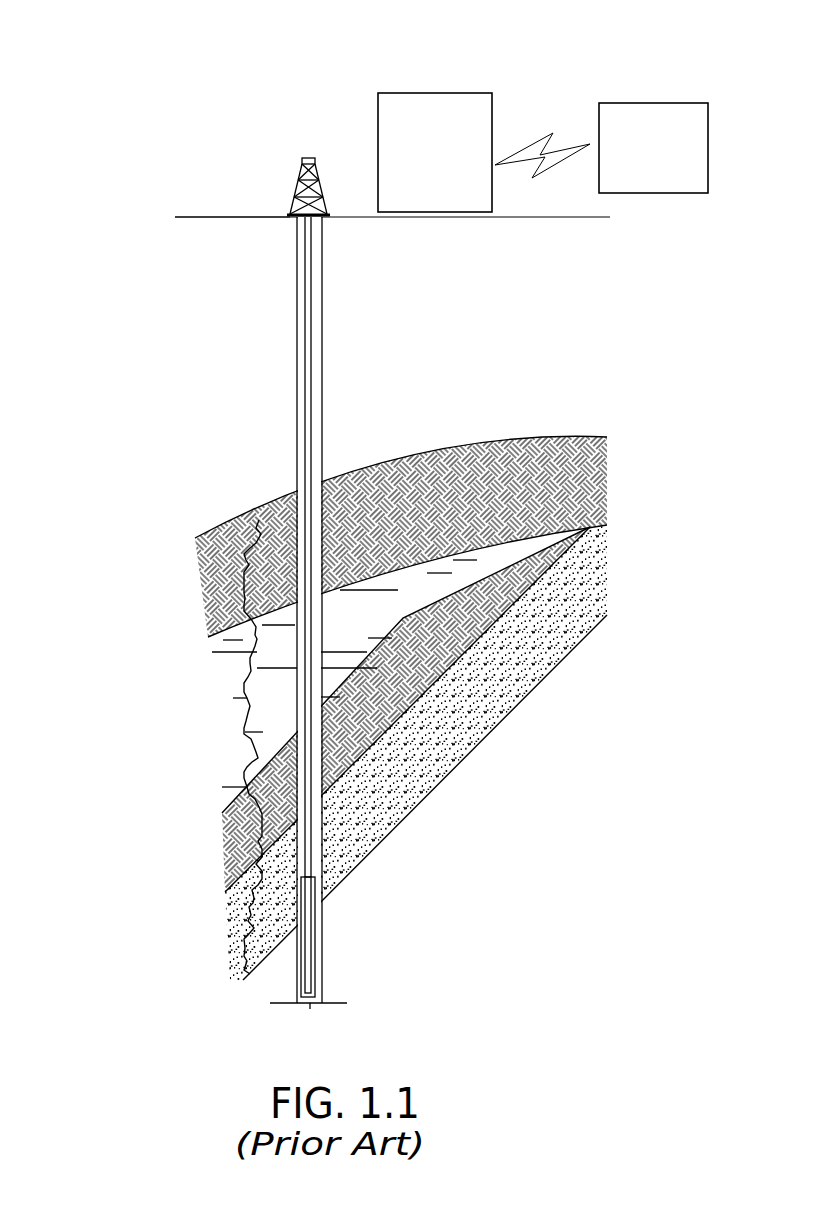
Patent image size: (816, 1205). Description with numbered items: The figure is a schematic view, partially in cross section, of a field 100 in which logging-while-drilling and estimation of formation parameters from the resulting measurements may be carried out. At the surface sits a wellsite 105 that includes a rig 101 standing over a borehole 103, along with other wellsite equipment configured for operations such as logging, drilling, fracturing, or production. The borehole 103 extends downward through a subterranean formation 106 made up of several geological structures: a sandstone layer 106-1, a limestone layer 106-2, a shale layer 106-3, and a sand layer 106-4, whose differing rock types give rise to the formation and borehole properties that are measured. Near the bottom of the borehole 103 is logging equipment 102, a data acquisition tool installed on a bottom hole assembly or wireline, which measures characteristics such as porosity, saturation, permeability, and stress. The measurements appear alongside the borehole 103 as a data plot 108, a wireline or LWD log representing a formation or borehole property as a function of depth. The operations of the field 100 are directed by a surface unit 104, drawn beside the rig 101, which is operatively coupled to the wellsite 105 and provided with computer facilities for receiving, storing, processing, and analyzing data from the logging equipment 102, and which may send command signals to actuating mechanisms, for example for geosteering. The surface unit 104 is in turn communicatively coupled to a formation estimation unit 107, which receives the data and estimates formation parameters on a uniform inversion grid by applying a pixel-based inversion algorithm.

The field 100 is at (391, 65).
The rig 101 is at (294, 146).
The logging equipment 102 is at (315, 937).
The borehole 103 is at (332, 298).
The surface unit 104 is at (435, 152).
The wellsite 105 is at (244, 186).
The subterranean formation 106 is at (401, 708).
The sandstone layer 106-1 is at (477, 512).
The limestone layer 106-2 is at (383, 630).
The shale layer 106-3 is at (460, 650).
The sand layer 106-4 is at (507, 709).
The formation estimation unit 107 is at (601, 148).
The data plot 108 is at (230, 723).